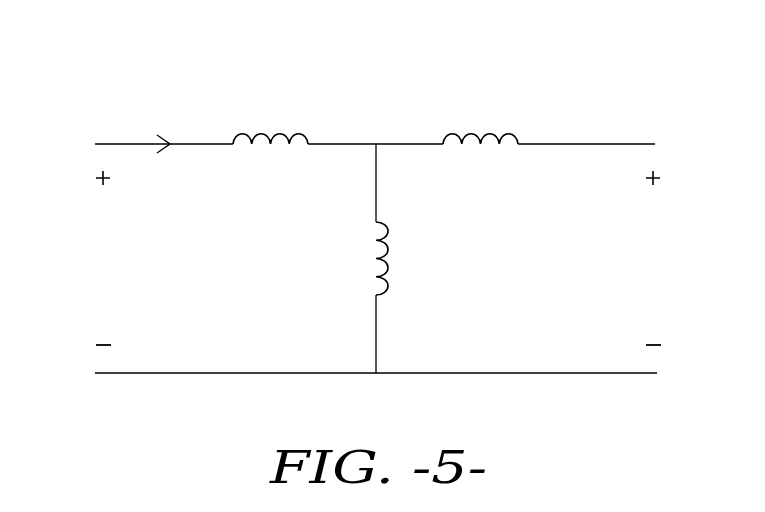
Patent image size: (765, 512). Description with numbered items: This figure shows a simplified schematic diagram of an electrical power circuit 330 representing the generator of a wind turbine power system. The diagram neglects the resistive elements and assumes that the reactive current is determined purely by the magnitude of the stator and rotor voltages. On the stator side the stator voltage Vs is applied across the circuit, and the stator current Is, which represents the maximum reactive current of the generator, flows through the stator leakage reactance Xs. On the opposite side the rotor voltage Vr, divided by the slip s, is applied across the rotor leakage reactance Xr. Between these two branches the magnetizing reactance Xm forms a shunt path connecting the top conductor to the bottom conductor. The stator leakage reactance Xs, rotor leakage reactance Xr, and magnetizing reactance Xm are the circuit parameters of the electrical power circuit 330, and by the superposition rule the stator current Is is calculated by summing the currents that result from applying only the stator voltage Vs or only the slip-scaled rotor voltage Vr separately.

The electrical power circuit 330 is at (124, 70).
The stator current Is is at (161, 129).
The stator leakage reactance Xs is at (270, 122).
The rotor leakage reactance Xr is at (480, 122).
The magnetizing reactance Xm is at (352, 258).
The stator voltage Vs is at (102, 258).
The rotor voltage Vr is at (650, 263).